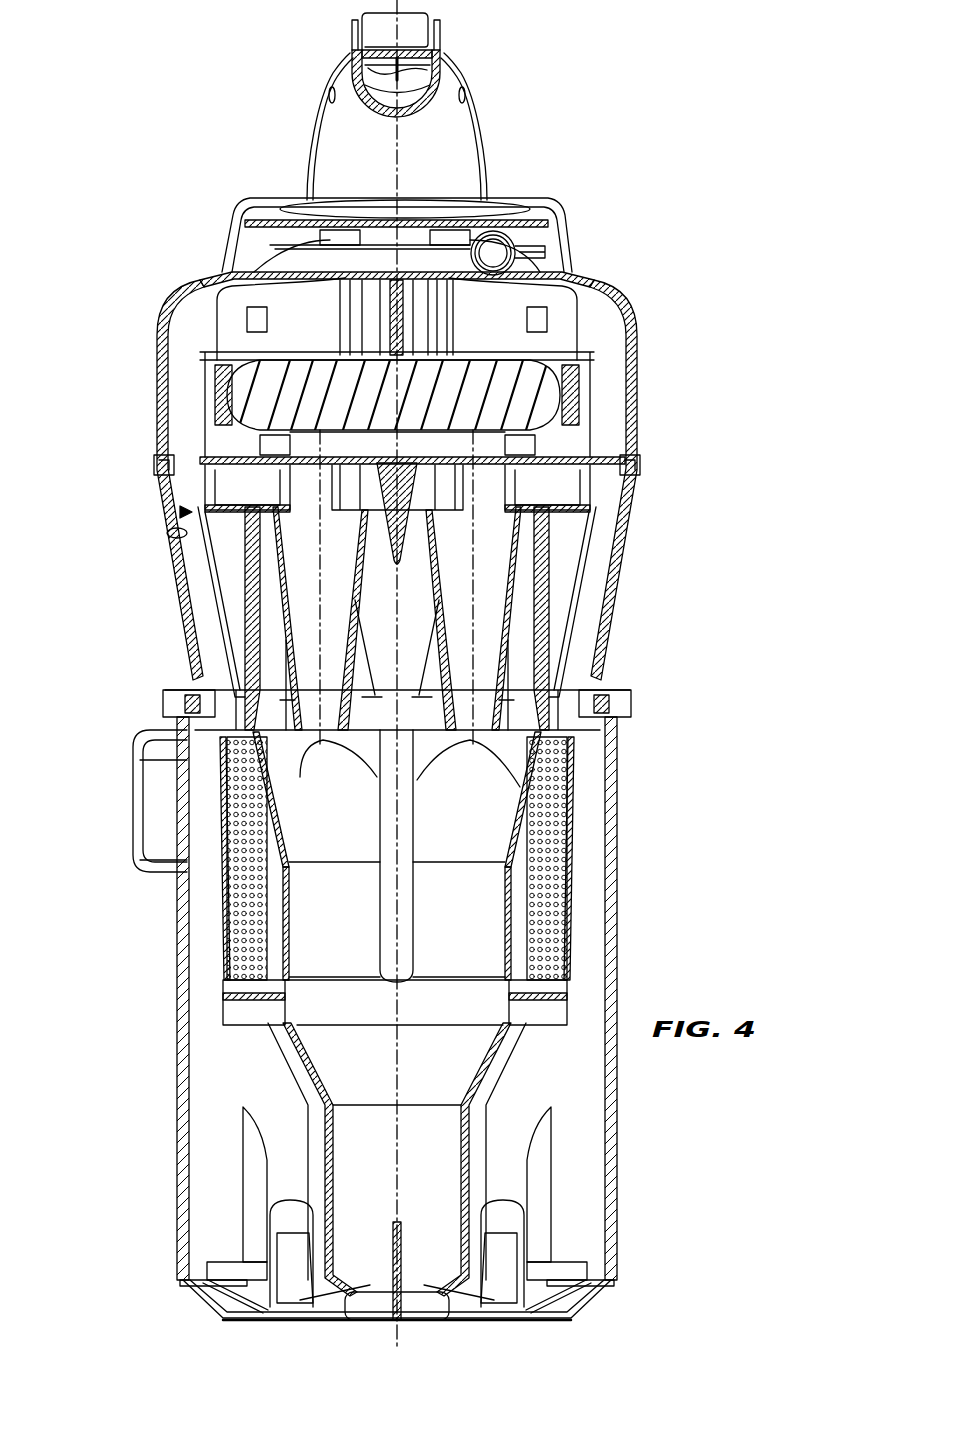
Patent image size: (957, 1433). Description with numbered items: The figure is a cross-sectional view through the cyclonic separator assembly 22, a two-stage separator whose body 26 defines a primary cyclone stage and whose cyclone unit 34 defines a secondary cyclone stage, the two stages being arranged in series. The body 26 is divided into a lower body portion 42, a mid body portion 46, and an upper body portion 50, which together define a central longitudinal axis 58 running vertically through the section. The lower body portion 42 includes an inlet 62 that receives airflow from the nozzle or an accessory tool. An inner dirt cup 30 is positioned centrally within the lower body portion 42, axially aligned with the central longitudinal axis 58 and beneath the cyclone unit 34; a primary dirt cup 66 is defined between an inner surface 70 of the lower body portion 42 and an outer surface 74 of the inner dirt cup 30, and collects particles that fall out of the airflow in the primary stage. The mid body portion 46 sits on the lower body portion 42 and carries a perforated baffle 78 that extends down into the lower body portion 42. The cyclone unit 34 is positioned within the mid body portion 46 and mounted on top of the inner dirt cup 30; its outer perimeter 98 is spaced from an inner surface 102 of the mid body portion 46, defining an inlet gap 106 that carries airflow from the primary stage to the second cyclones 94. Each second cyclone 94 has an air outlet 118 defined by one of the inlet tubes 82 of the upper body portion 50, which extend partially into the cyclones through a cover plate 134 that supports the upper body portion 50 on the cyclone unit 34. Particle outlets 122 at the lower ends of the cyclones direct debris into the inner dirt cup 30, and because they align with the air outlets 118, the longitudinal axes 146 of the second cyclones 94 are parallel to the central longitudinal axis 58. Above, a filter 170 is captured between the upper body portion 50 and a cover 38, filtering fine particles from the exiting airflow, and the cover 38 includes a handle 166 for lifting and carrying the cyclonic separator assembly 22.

The cyclonic separator assembly 22 is at (688, 85).
The handle 166 is at (353, 37).
The central longitudinal axis 58 is at (397, 37).
The cover 38 is at (540, 203).
The upper body portion 50 is at (165, 402).
The filter 170 is at (540, 360).
The inlet tubes 82 is at (297, 488).
The cover plate 134 is at (592, 480).
The cyclone unit 34 is at (638, 475).
The outer perimeter 98 is at (597, 507).
The inlet gap 106 is at (183, 512).
The inner surface 102 is at (167, 535).
The air outlets 118 is at (312, 522).
The second cyclones 94 is at (295, 582).
The mid body portion 46 is at (183, 617).
The longitudinal axes 146 is at (315, 648).
The inlet 62 is at (127, 797).
The body 26 is at (642, 783).
The perforated baffle 78 is at (565, 917).
The particle outlets 122 is at (320, 732).
The outer surface 74 is at (310, 1083).
The inner dirt cup 30 is at (473, 1078).
The lower body portion 42 is at (175, 1165).
The inner surface 70 is at (578, 1163).
The primary dirt cup 66 is at (207, 1232).